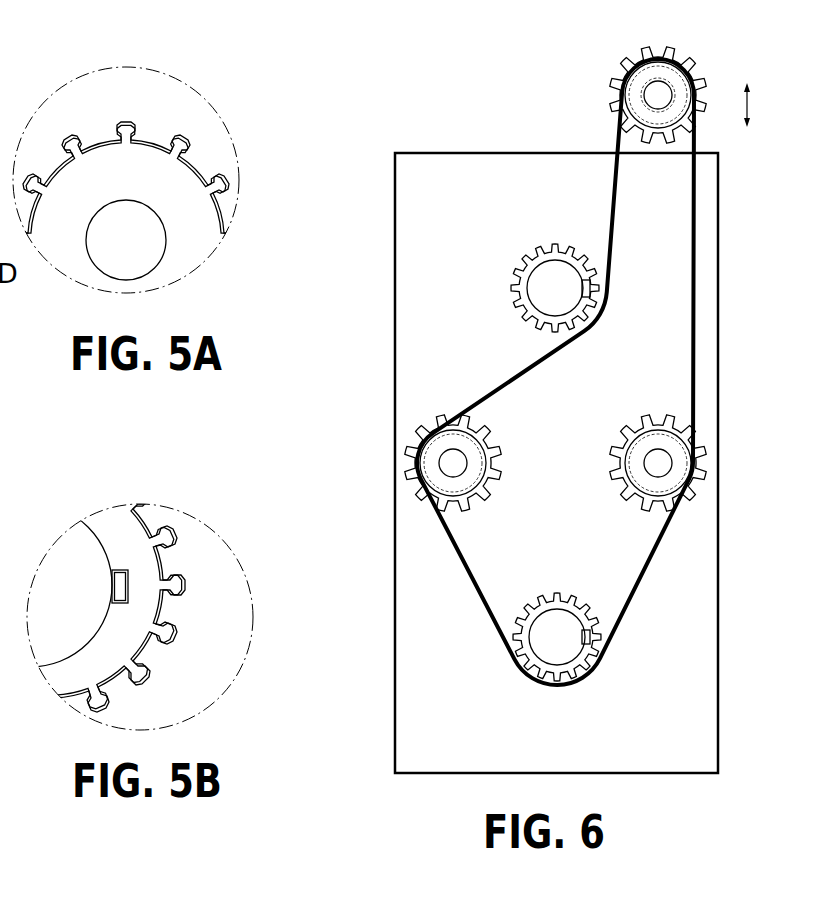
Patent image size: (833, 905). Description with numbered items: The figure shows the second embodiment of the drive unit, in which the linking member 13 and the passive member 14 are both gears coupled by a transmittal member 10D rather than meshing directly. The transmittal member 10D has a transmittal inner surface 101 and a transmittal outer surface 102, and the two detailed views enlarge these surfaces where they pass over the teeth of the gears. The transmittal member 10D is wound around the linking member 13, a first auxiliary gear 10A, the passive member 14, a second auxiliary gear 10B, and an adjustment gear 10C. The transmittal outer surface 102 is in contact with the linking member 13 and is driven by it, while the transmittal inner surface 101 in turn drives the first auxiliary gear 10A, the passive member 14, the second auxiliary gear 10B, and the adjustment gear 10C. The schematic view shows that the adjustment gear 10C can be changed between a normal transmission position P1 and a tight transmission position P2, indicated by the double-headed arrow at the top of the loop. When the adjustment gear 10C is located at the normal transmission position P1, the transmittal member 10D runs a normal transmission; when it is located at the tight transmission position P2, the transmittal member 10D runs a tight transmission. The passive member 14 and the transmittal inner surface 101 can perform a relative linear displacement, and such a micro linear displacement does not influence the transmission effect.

In FIG. 5A, the transmittal inner surface 101 is at (156, 190).
In FIG. 5B, the transmittal inner surface 101 is at (138, 589).
In FIG. 5A, the transmittal outer surface 102 is at (187, 137).
In FIG. 5B, the transmittal outer surface 102 is at (167, 522).
In FIG. 6, the first auxiliary gear 10A is at (434, 457).
In FIG. 6, the second auxiliary gear 10B is at (673, 482).
In FIG. 6, the adjustment gear 10C is at (622, 118).
In FIG. 6, the transmittal member 10D is at (700, 337).
In FIG. 6, the linking member 13 is at (525, 252).
In FIG. 6, the passive member 14 is at (513, 637).
In FIG. 6, the normal transmission position P1 is at (676, 138).
In FIG. 6, the tight transmission position P2 is at (714, 104).